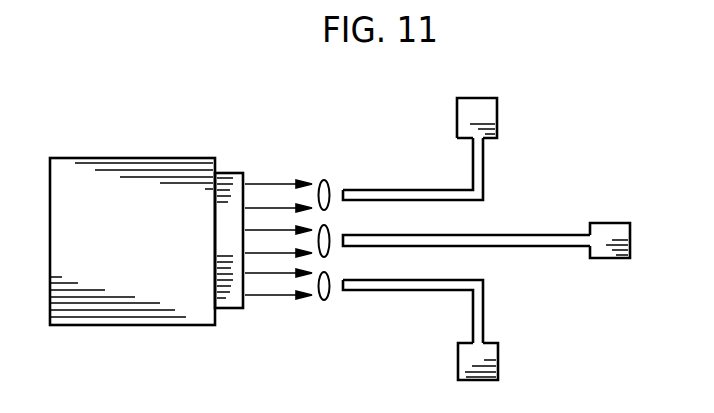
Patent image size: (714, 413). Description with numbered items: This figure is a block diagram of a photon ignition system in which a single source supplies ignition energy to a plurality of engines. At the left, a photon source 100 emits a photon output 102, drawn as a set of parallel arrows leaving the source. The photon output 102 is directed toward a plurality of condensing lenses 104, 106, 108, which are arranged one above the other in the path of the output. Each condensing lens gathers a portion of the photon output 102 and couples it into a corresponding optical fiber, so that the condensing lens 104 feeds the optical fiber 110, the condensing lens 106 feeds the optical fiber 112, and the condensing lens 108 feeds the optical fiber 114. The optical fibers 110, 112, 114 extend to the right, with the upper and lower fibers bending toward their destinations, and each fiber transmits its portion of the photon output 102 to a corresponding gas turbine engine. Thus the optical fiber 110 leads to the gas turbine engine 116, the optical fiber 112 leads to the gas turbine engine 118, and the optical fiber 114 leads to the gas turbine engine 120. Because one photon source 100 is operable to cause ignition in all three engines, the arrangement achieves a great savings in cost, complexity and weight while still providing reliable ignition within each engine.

The photon source 100 is at (153, 158).
The photon output 102 is at (281, 183).
The condensing lens 104 is at (328, 180).
The condensing lens 106 is at (330, 229).
The condensing lens 108 is at (324, 300).
The optical fiber 110 is at (408, 190).
The optical fiber 112 is at (492, 235).
The optical fiber 114 is at (408, 280).
The gas turbine engine 116 is at (466, 98).
The gas turbine engine 118 is at (598, 223).
The gas turbine engine 120 is at (498, 372).